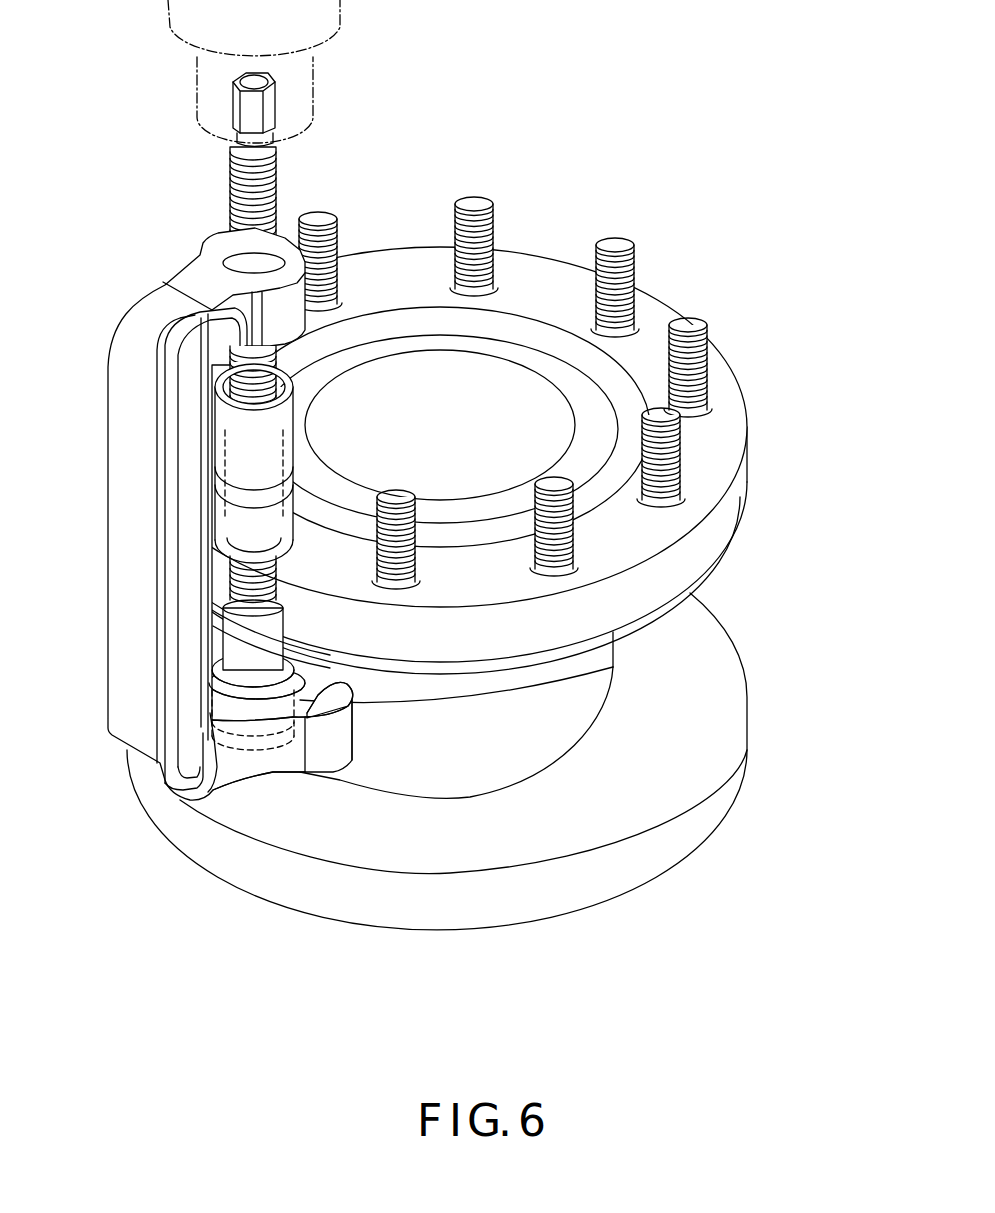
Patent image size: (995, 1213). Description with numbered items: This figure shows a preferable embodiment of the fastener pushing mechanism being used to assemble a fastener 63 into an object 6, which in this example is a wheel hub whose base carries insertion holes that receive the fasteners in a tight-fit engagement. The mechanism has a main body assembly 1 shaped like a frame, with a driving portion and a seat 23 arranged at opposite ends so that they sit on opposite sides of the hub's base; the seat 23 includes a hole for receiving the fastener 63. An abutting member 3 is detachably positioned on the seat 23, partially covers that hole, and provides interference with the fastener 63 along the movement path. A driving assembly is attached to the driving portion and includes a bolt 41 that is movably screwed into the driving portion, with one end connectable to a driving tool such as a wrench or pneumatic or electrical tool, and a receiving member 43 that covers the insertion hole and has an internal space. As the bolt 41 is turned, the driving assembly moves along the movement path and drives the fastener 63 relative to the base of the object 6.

The main body assembly 1 is at (112, 307).
The abutting member 3 is at (262, 700).
The object 6 is at (765, 443).
The seat 23 is at (327, 748).
The bolt 41 is at (230, 197).
The receiving member 43 is at (262, 462).
The fastener 63 is at (237, 668).